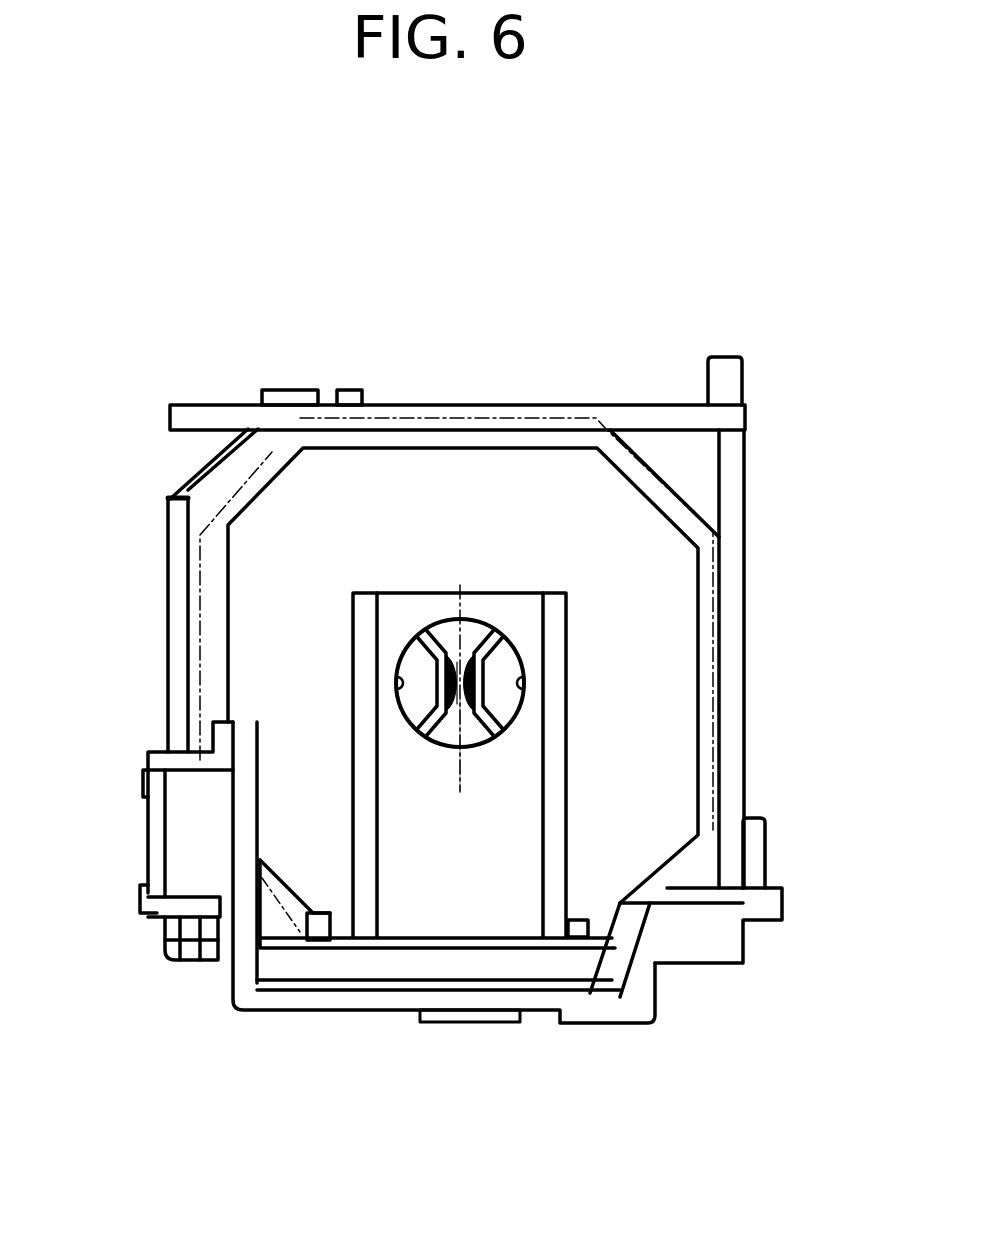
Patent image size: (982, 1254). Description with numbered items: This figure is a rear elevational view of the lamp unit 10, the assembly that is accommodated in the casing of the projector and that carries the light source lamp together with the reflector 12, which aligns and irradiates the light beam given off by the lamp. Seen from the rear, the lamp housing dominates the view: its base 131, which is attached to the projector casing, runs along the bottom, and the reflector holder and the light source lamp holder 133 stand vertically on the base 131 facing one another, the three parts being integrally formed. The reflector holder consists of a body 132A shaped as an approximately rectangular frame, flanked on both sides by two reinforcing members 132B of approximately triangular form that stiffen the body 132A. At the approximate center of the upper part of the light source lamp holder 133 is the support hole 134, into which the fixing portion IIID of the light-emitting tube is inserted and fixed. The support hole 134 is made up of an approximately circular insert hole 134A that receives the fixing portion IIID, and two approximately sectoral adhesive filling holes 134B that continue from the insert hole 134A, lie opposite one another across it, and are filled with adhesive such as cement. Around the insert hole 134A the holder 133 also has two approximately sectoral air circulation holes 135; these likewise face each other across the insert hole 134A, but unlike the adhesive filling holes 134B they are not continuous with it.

The lamp unit 10 is at (207, 348).
The reflector 12 is at (640, 443).
The base 131 is at (288, 960).
The body 132A is at (500, 437).
The reinforcing members 132B is at (173, 598).
The light source lamp holder 133 is at (532, 762).
The support hole 134 is at (592, 478).
The insert hole 134A is at (461, 660).
The adhesive filling holes 134B is at (447, 640).
The air circulation holes 135 is at (407, 682).
The fixing portion IIID is at (458, 764).